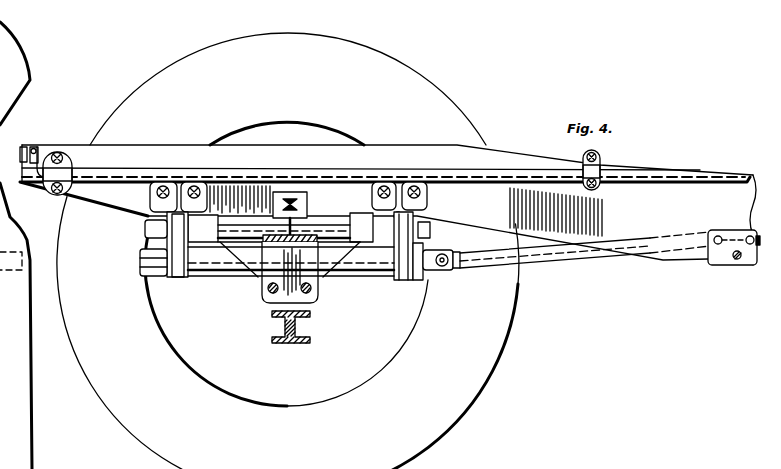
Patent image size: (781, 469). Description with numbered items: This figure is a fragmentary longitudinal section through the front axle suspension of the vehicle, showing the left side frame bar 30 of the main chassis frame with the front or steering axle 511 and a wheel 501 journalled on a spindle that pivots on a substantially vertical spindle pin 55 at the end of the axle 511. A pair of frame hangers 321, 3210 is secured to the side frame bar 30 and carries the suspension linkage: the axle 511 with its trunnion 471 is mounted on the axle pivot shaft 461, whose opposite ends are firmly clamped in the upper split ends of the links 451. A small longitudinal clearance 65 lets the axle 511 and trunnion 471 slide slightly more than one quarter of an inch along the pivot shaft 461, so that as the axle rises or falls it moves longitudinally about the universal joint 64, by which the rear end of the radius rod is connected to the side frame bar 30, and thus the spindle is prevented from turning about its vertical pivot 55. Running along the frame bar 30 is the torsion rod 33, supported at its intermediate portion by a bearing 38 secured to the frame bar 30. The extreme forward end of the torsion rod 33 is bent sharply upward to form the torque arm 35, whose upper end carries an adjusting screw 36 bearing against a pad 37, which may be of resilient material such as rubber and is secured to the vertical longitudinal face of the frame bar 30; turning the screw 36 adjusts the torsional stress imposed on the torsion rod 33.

The side frame bar 30 is at (506, 156).
The torsion rod 33 is at (702, 178).
The torque arm 35 is at (22, 158).
The adjusting screw 36 is at (30, 147).
The pad 37 is at (47, 165).
The bearing 38 is at (606, 166).
The frame hanger 321 is at (150, 187).
The frame hanger 3210 is at (430, 188).
The longitudinal clearance 65 is at (380, 198).
The axle pivot shaft 461 is at (146, 231).
The link 451 is at (167, 278).
The trunnion 471 is at (215, 222).
The front axle 511 is at (290, 344).
The spindle pin 55 is at (563, 256).
The universal joint 64 is at (738, 262).
The wheel 501 is at (27, 454).